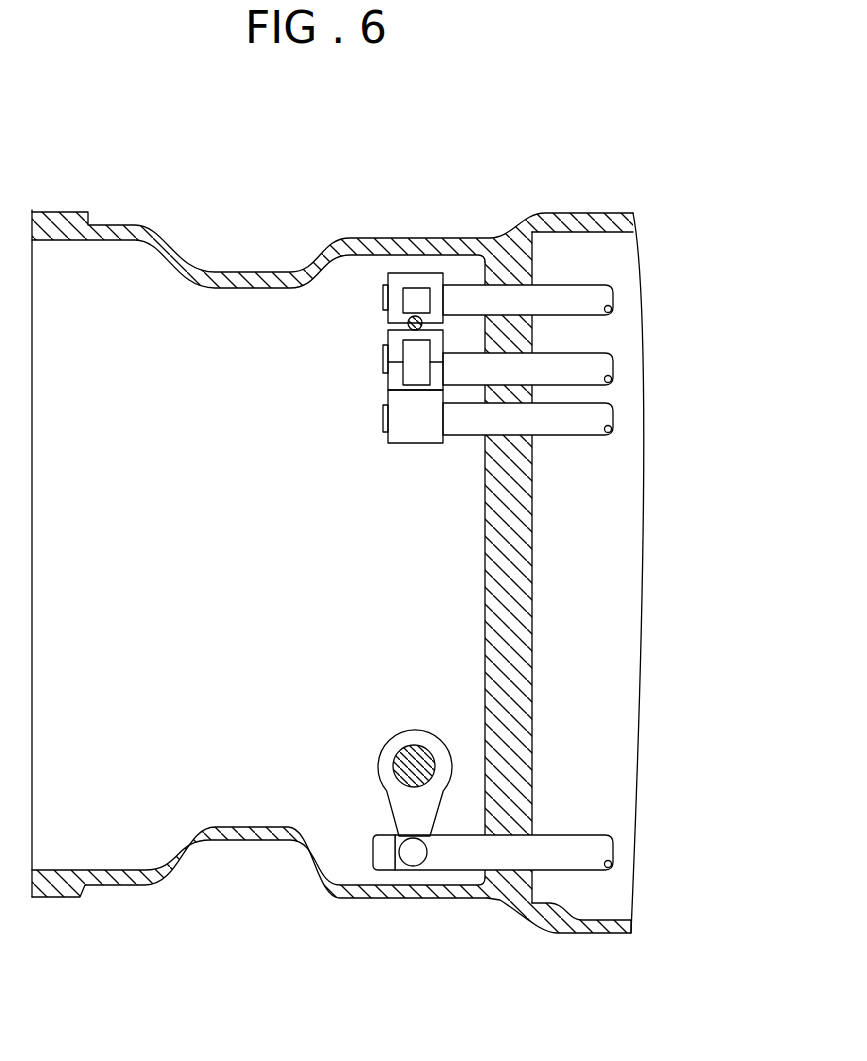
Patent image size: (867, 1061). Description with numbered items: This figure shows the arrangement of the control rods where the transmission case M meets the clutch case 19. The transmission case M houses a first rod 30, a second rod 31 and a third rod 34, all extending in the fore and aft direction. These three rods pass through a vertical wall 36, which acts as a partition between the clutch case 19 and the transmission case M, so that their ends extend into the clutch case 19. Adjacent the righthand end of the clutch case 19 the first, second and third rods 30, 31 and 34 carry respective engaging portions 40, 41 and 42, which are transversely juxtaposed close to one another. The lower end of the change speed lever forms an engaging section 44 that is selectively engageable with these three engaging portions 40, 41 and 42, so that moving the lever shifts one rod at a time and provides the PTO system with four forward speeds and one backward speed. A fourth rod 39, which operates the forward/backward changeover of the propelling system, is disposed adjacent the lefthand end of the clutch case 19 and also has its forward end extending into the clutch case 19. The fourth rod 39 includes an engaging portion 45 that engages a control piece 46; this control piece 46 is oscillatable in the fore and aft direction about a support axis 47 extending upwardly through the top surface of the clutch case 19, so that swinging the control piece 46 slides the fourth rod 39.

The engaging portion 41 is at (419, 281).
The second rod 31 is at (592, 298).
The engaging section 44 is at (408, 318).
The engaging portion 40 is at (392, 340).
The engaging portion 42 is at (390, 385).
The first rod 30 is at (598, 366).
The third rod 34 is at (588, 425).
The vertical wall 36 is at (485, 563).
The support axis 47 is at (414, 757).
The control piece 46 is at (388, 800).
The fourth rod 39 is at (577, 848).
The clutch case 19 is at (233, 839).
The engaging portion 45 is at (412, 857).
The transmission case M is at (580, 933).